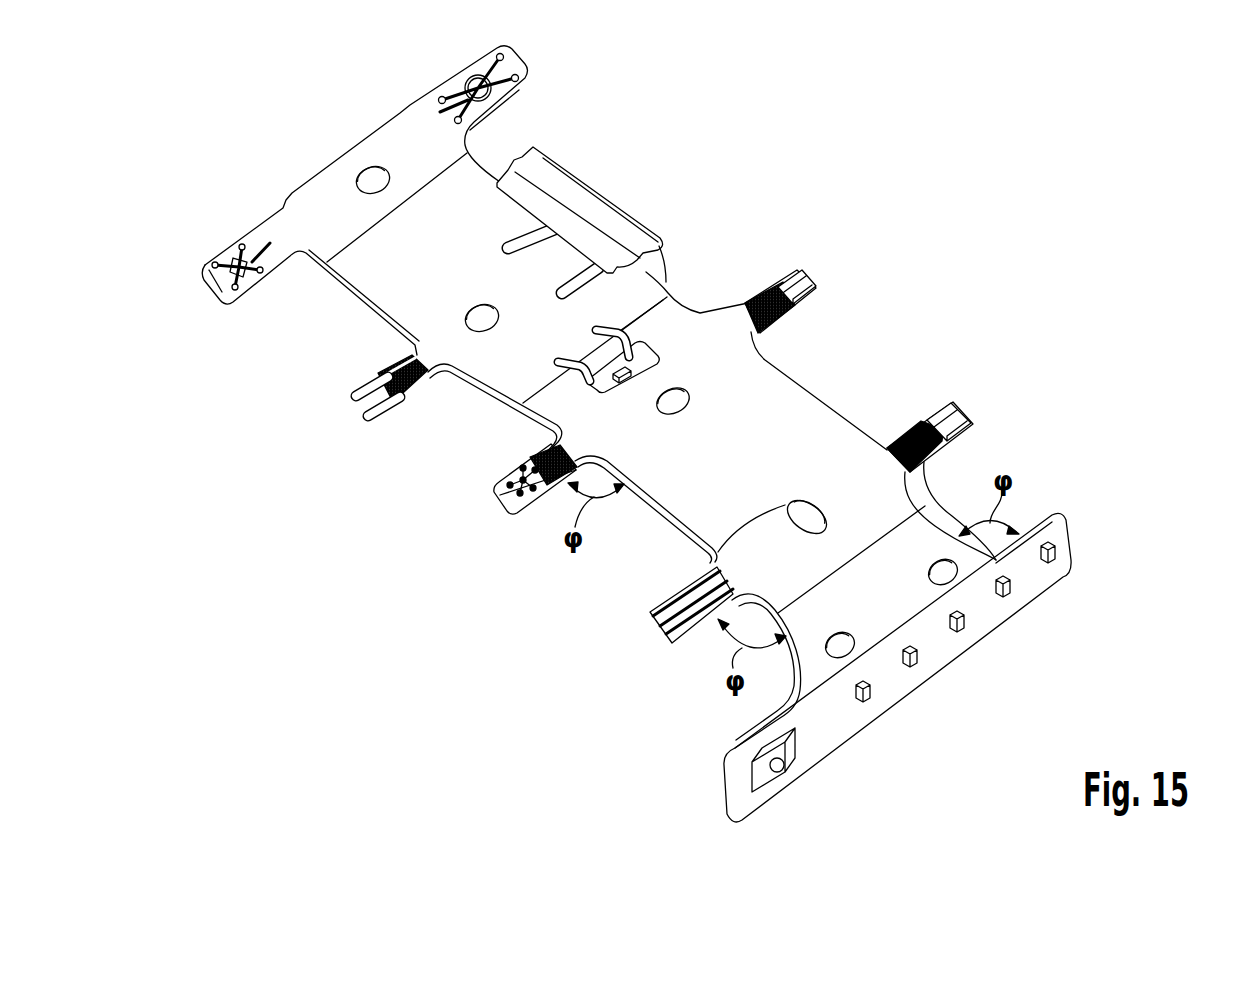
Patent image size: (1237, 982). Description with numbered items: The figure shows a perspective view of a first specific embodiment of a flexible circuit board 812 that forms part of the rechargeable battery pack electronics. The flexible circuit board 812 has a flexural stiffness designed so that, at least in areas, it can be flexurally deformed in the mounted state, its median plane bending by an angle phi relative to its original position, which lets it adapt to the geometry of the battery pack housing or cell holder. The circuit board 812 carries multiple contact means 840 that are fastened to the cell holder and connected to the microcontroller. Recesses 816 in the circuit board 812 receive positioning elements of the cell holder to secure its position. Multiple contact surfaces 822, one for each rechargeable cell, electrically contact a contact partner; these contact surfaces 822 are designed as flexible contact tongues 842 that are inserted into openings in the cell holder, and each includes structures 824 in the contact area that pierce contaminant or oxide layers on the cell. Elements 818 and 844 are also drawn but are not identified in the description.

The flexible circuit board 812 is at (807, 418).
The recesses 816 is at (712, 548).
The retaining clip 818 is at (627, 363).
The contact surfaces 822 is at (522, 92).
The structures 824 is at (800, 318).
The contact means 840 is at (832, 226).
The flexible contact tongues 842 is at (795, 281).
The plug housing 844 is at (593, 233).